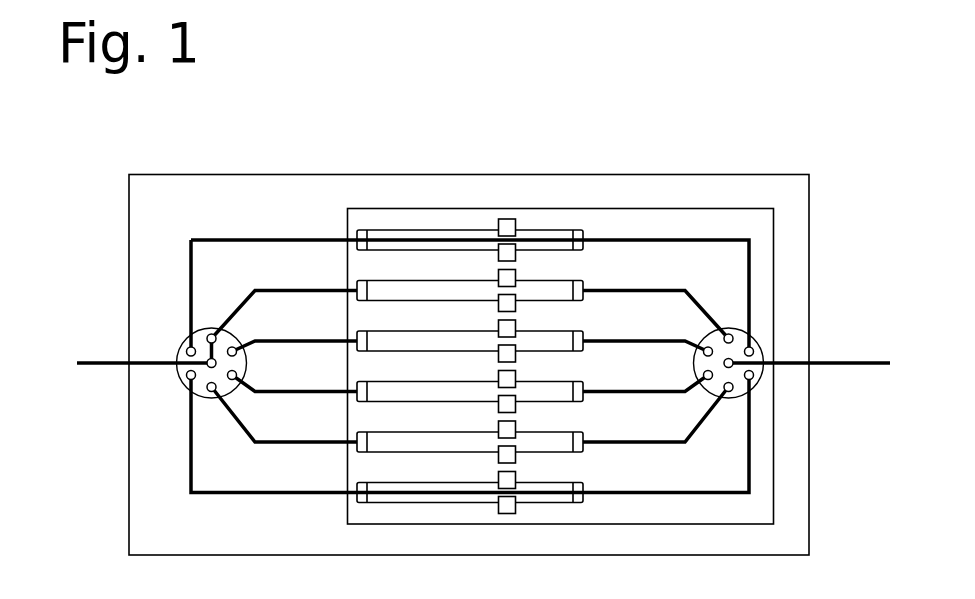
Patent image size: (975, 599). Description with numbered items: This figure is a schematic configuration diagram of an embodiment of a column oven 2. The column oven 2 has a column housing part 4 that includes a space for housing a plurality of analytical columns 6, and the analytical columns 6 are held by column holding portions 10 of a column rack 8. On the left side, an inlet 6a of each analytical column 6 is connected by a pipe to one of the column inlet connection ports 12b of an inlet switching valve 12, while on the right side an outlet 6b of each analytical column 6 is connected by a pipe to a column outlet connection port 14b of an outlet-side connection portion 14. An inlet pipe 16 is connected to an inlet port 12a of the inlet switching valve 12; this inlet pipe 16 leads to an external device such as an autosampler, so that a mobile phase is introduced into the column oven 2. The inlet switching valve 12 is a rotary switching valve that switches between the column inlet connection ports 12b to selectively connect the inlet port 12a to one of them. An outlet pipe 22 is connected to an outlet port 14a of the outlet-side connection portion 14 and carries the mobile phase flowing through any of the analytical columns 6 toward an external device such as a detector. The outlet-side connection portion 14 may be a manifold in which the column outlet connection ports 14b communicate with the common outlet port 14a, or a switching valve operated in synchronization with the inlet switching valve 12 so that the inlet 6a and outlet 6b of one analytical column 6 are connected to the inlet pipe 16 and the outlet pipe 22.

The column oven 2 is at (783, 175).
The column housing part 4 is at (298, 200).
The analytical column 6 is at (465, 230).
The inlet 6a is at (362, 230).
The outlet 6b is at (577, 230).
The column rack 8 is at (663, 208).
The column holding portion 10 is at (508, 227).
The inlet switching valve 12 is at (208, 328).
The inlet port 12a is at (192, 377).
The column inlet connection port 12b is at (189, 350).
The outlet-side connection portion 14 is at (735, 330).
The outlet port 14a is at (748, 378).
The column outlet connection port 14b is at (757, 343).
The inlet pipe 16 is at (112, 360).
The outlet pipe 22 is at (827, 363).